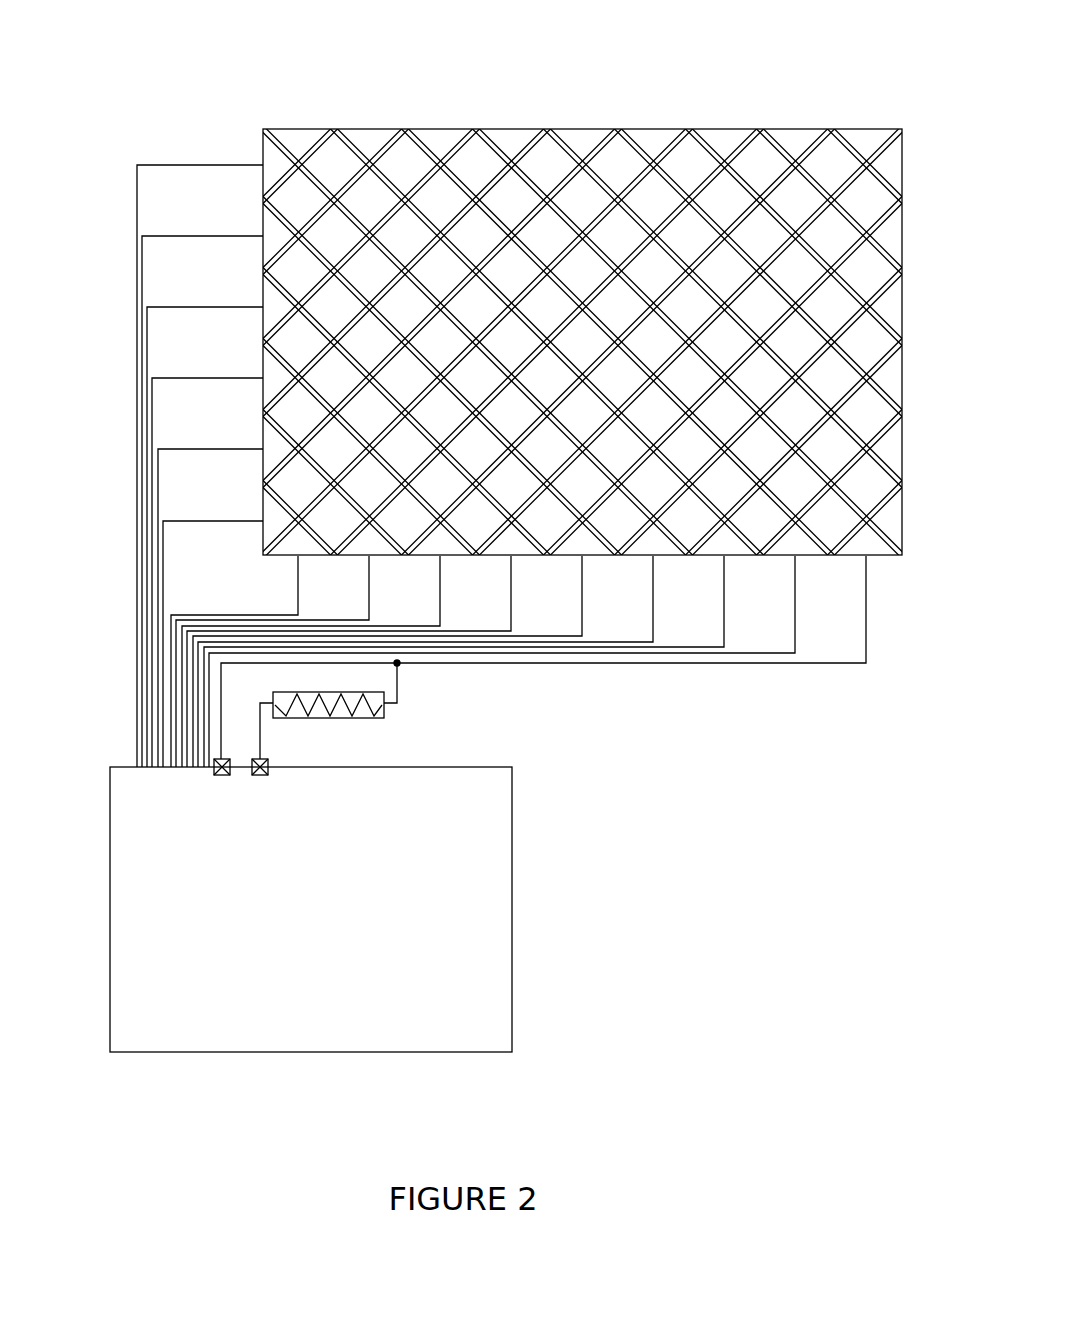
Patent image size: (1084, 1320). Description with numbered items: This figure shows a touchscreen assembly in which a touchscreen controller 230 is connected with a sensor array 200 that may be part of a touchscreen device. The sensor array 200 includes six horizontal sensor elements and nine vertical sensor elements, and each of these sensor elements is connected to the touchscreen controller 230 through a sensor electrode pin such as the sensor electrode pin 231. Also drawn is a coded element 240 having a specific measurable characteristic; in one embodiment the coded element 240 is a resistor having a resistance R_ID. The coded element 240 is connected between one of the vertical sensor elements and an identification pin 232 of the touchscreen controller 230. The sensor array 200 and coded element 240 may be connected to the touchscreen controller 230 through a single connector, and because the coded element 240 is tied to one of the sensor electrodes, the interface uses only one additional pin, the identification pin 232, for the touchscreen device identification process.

The sensor array 200 is at (228, 98).
The touchscreen controller 230 is at (311, 909).
The sensor electrode pin 231 is at (208, 780).
The identification pin 232 is at (267, 782).
The coded element 240 is at (392, 710).